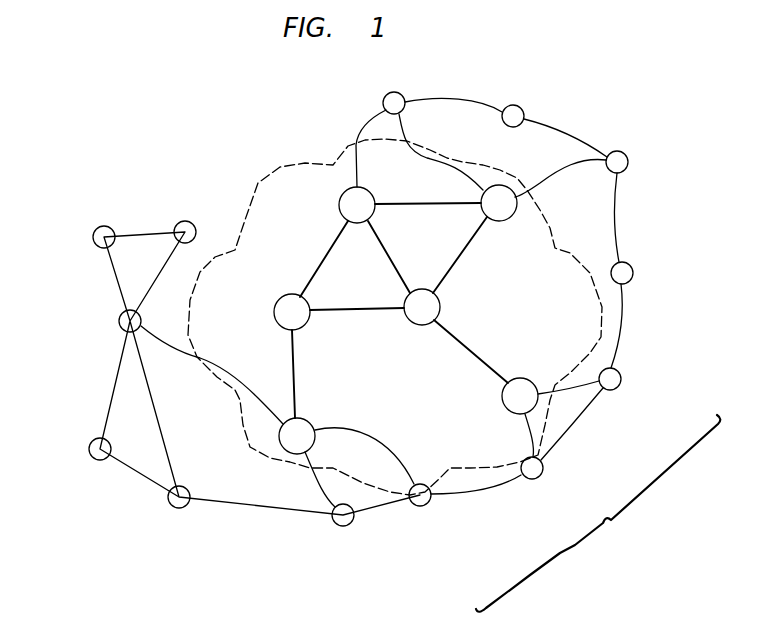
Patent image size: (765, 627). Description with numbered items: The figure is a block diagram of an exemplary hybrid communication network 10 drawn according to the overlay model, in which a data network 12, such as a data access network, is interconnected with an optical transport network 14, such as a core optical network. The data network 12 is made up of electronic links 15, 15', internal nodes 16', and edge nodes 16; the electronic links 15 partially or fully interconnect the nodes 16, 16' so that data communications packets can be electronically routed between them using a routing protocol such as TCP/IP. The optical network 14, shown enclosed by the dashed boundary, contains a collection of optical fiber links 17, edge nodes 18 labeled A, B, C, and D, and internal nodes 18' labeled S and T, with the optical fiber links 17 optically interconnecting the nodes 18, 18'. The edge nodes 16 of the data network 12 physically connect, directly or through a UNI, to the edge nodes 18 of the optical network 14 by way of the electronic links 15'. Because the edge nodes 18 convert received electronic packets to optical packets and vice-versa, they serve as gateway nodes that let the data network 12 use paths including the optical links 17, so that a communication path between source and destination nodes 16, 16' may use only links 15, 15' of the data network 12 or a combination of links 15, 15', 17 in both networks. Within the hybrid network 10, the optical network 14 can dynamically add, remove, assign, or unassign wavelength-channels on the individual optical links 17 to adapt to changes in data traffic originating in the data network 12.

The hybrid communication network 10 is at (608, 522).
The data network 12 is at (110, 177).
The optical transport network 14 is at (284, 221).
The electronic links 15 is at (367, 301).
The electronic links 15' is at (385, 302).
The edge nodes 16 is at (373, 309).
The internal nodes 16' is at (362, 336).
The optical fiber links 17 is at (425, 207).
The edge nodes 18 is at (408, 319).
The internal nodes 18' is at (340, 328).